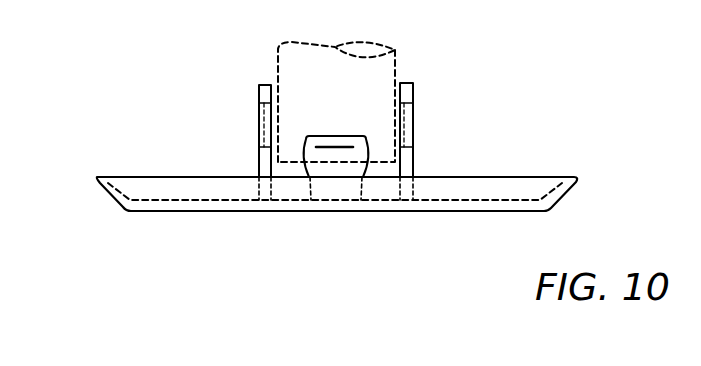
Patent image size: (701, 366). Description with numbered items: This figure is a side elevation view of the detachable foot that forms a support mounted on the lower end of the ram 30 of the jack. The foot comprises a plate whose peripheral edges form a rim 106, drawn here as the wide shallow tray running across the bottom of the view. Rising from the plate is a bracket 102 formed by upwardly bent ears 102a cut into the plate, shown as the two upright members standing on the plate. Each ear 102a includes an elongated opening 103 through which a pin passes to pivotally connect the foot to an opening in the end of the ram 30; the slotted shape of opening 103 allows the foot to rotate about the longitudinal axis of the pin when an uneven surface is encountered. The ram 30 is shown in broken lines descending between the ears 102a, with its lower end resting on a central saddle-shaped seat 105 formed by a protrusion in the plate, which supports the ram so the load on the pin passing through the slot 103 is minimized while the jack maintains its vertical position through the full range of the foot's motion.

The ram 30 is at (401, 51).
The bracket 102 is at (423, 80).
The upwardly bent ears 102a is at (261, 85).
The elongated opening 103 is at (261, 118).
The hub 105 is at (334, 145).
The rim 106 is at (99, 176).